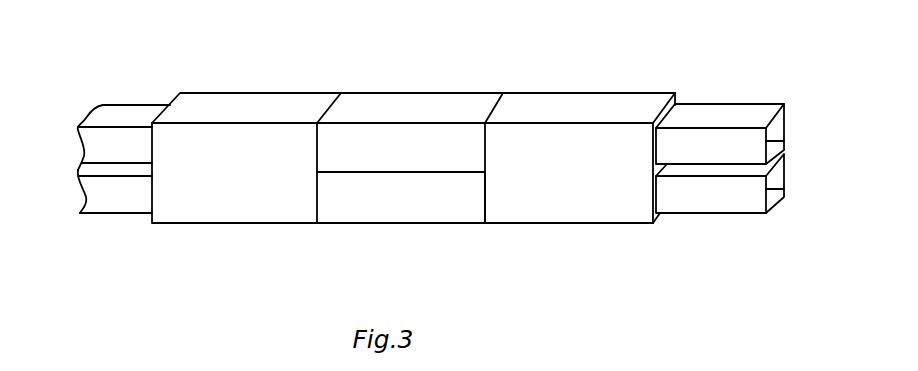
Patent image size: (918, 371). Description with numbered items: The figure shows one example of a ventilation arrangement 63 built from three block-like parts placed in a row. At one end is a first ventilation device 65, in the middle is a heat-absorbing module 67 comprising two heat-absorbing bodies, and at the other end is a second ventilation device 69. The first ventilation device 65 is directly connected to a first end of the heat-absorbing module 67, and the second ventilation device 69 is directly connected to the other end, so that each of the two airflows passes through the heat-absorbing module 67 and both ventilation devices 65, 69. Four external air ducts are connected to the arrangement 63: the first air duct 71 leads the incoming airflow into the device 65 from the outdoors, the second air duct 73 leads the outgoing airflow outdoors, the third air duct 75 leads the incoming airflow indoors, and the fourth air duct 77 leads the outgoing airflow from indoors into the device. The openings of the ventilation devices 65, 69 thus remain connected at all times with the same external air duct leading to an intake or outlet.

The ventilation arrangement 63 is at (242, 197).
The first ventilation device 65 is at (242, 142).
The heat-absorbing module 67 is at (383, 208).
The second ventilation device 69 is at (563, 203).
The first air duct 71 is at (122, 115).
The second air duct 73 is at (110, 198).
The third air duct 75 is at (713, 142).
The fourth air duct 77 is at (718, 202).